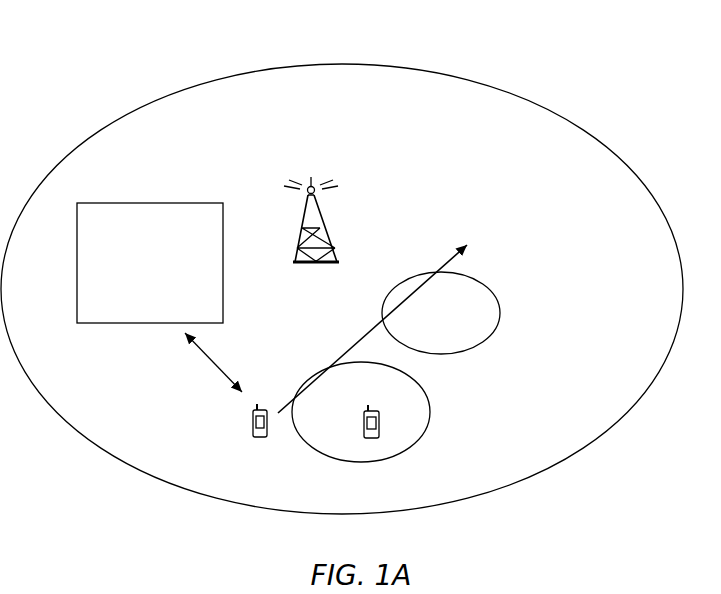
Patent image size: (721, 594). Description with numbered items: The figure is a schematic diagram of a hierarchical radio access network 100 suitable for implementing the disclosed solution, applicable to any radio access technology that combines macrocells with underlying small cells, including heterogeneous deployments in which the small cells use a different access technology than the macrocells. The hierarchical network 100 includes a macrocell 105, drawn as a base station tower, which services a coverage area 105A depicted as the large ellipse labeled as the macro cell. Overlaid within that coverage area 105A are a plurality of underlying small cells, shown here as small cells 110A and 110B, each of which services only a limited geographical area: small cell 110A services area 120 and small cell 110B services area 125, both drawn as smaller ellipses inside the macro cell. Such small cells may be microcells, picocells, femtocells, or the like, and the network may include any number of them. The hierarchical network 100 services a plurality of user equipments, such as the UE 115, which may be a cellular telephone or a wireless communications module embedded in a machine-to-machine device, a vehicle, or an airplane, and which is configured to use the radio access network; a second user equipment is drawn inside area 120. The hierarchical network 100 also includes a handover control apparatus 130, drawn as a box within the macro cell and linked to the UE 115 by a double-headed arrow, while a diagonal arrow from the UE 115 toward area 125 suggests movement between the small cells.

The hierarchical network 100 is at (145, 80).
The macrocell 105 is at (326, 237).
The coverage area 105A is at (600, 227).
The small cell 110A is at (350, 435).
The small cell 110B is at (408, 344).
The UE 115 is at (247, 418).
The area 120 is at (401, 412).
The area 125 is at (476, 306).
The handover control apparatus 130 is at (158, 202).